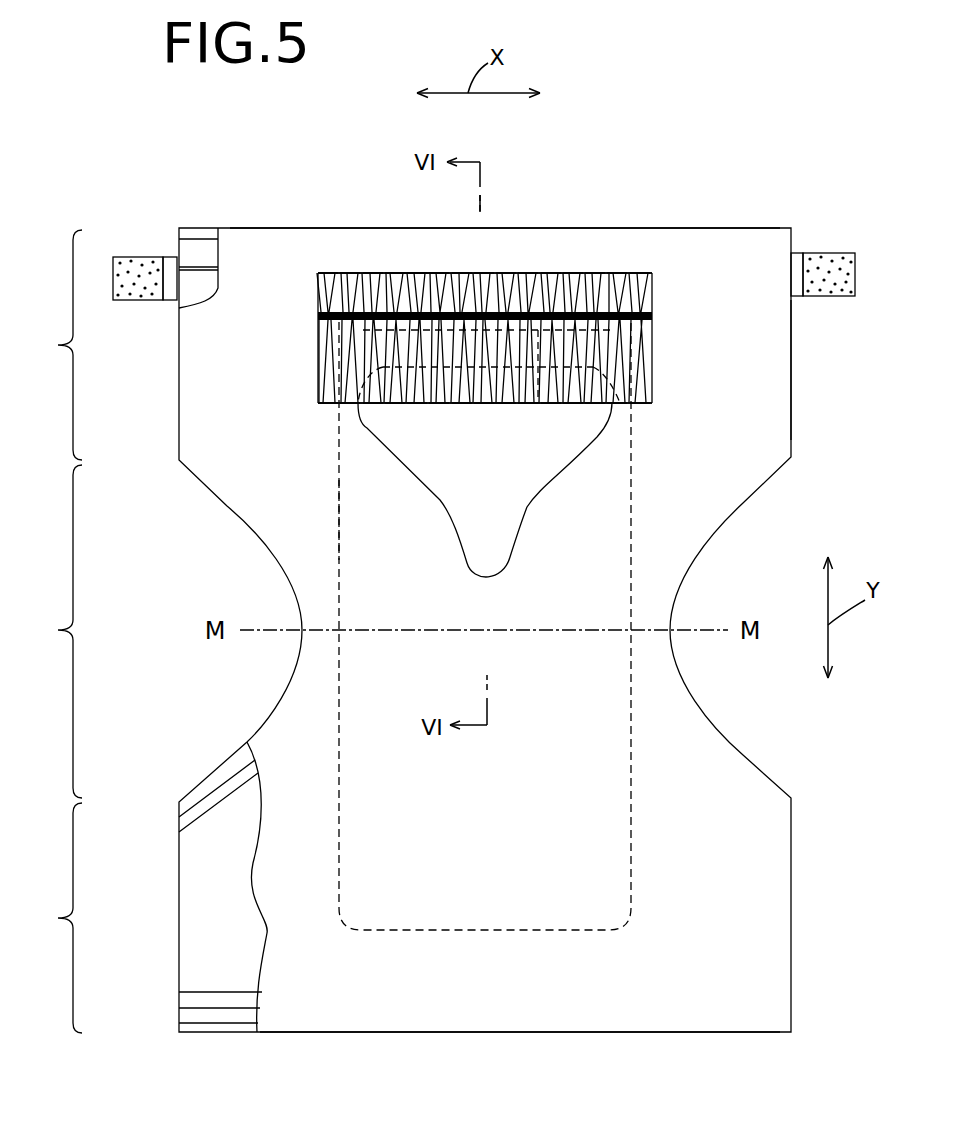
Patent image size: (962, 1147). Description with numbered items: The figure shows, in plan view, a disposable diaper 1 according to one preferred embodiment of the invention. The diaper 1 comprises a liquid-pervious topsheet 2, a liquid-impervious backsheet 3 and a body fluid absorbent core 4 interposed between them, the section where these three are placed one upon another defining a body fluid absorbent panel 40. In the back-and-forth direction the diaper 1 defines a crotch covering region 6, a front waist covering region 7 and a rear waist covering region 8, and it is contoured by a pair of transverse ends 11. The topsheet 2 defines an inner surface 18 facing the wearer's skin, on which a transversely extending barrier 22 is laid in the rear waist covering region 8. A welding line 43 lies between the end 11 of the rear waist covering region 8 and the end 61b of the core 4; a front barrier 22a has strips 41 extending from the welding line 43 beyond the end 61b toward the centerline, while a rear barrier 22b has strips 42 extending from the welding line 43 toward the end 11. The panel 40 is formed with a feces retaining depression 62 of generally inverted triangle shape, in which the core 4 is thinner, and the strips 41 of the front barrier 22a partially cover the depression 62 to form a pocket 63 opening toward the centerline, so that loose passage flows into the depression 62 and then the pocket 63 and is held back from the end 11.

The disposable diaper 1 is at (685, 130).
The topsheet 2 is at (363, 1012).
The backsheet 3 is at (200, 897).
The body fluid absorbent core 4 is at (605, 516).
The crotch covering region 6 is at (56, 631).
The front waist covering region 7 is at (56, 918).
The rear waist covering region 8 is at (56, 345).
The end 11 is at (685, 228).
The inner surface 18 is at (767, 433).
The barrier 22 is at (532, 236).
The front barrier 22a is at (322, 407).
The rear barrier 22b is at (348, 265).
The body fluid absorbent panel 40 is at (610, 740).
The strips 41 is at (510, 405).
The strips 42 is at (430, 273).
The welding line 43 is at (318, 315).
The end of the core 61b is at (577, 332).
The feces retaining depression 62 is at (460, 502).
The pocket 63 is at (533, 405).